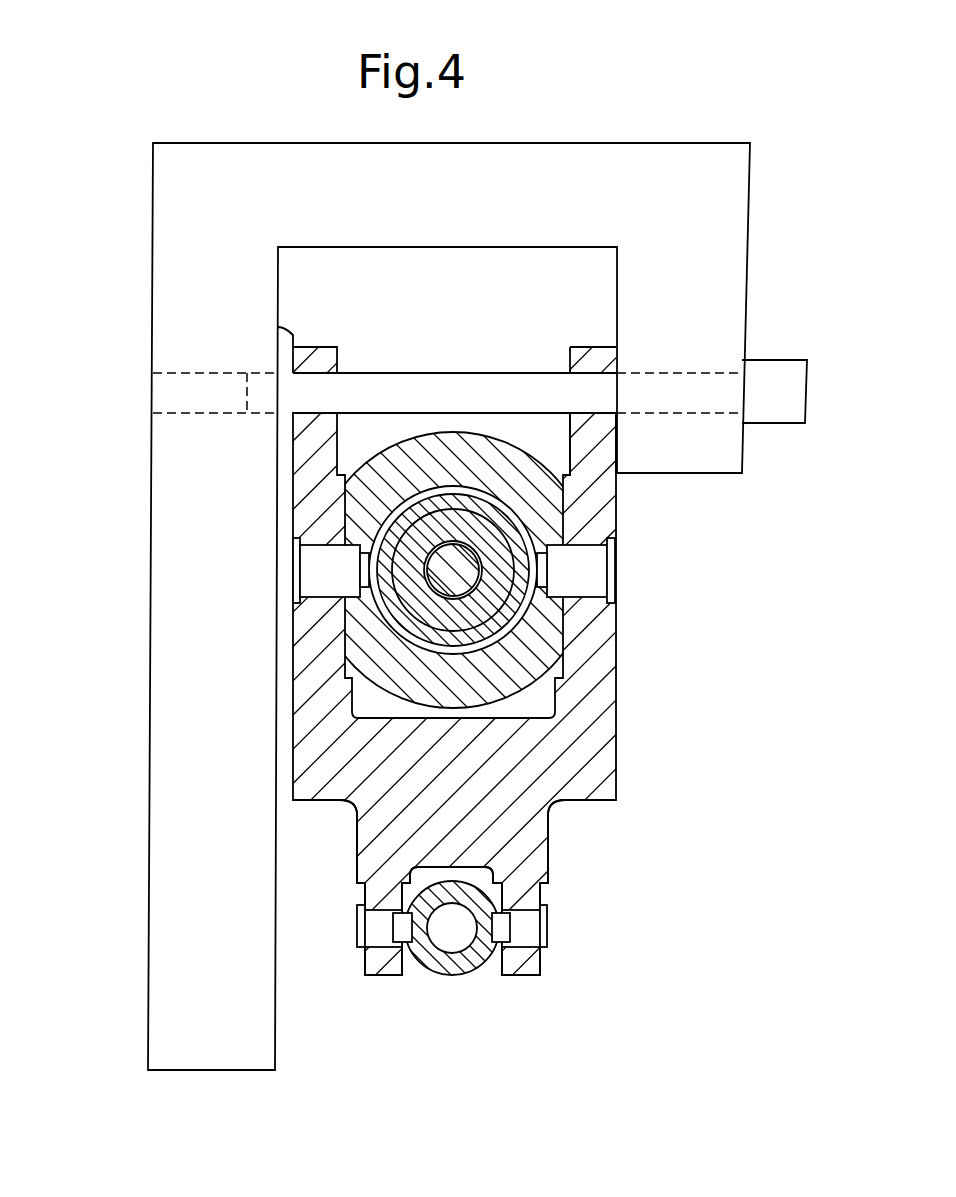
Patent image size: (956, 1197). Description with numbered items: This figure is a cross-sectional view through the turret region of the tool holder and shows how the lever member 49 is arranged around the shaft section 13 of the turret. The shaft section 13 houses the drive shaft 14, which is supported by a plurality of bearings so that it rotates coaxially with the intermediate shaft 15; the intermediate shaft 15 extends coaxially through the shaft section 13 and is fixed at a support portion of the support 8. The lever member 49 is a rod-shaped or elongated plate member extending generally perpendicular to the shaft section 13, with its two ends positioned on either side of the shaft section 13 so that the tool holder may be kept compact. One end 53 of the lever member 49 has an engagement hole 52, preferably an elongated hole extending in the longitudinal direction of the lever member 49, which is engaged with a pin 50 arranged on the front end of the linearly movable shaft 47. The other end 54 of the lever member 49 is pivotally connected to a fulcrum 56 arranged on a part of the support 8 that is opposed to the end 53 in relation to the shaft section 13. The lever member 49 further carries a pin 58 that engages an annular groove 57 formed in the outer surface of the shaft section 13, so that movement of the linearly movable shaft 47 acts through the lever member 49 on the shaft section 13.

The support 8 is at (217, 223).
The shaft section 13 is at (403, 625).
The drive shaft 14 is at (443, 562).
The intermediate shaft 15 is at (487, 613).
The linearly movable shaft 47 is at (428, 960).
The lever member 49 is at (598, 747).
The pin 50 is at (543, 937).
The engagement hole 52 is at (521, 913).
The one end of lever member 53 is at (540, 872).
The other end of lever member 54 is at (603, 452).
The fulcrum 56 is at (505, 390).
The annular groove 57 is at (370, 537).
The pin 58 is at (292, 572).